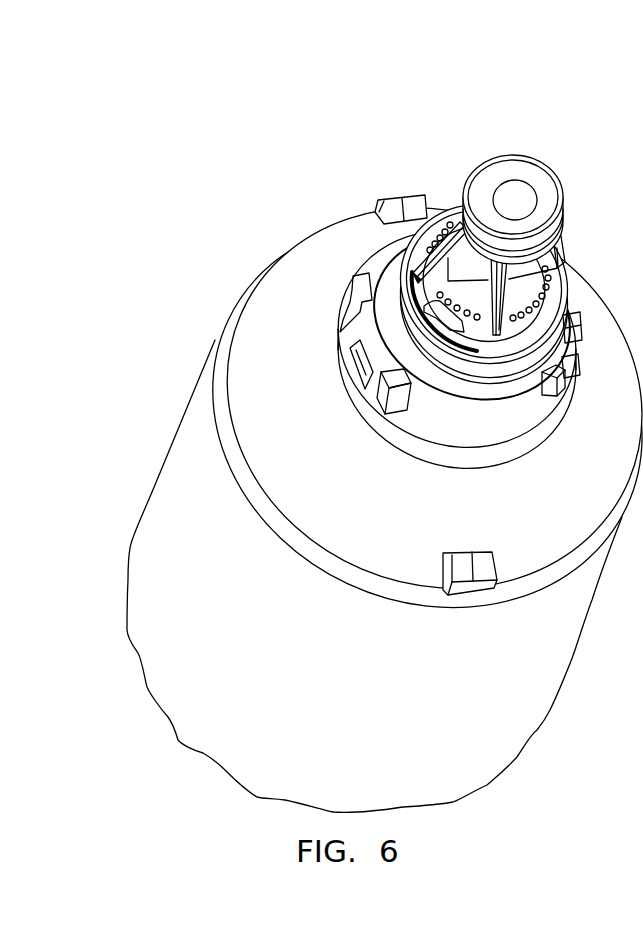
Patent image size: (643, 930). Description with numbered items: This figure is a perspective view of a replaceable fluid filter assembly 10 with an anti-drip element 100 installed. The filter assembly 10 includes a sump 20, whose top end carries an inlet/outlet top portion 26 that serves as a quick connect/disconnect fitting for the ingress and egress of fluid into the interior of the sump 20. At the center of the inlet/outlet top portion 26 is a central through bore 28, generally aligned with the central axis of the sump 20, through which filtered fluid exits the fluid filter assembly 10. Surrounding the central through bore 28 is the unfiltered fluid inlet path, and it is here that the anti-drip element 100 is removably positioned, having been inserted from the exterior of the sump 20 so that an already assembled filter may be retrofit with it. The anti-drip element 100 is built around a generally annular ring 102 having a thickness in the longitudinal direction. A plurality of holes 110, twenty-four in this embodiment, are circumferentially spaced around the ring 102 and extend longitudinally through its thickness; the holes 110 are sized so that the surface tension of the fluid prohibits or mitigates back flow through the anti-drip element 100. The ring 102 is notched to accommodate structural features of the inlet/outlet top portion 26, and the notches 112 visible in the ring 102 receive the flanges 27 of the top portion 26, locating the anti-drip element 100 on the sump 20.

The fluid filter assembly 10 is at (316, 152).
The sump 20 is at (543, 645).
The inlet/outlet top portion 26 is at (553, 266).
The flanges 27 is at (497, 284).
The central through bore 28 is at (518, 197).
The anti-drip element 100 is at (442, 189).
The annular ring 102 is at (426, 231).
The holes 110 is at (545, 289).
The notches 112 is at (423, 259).